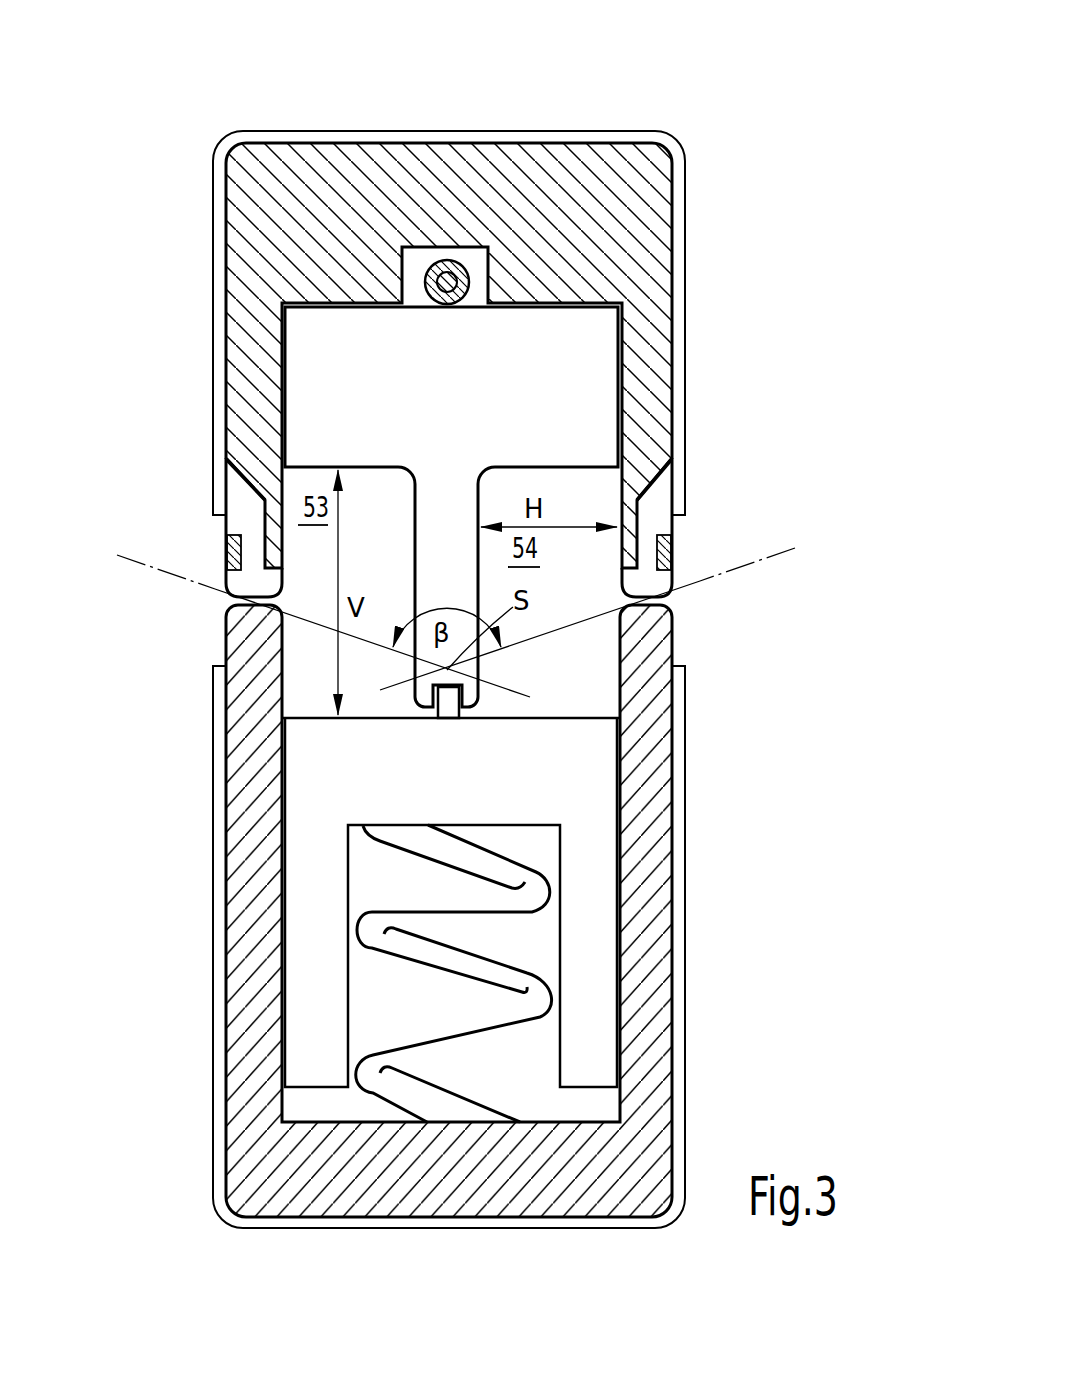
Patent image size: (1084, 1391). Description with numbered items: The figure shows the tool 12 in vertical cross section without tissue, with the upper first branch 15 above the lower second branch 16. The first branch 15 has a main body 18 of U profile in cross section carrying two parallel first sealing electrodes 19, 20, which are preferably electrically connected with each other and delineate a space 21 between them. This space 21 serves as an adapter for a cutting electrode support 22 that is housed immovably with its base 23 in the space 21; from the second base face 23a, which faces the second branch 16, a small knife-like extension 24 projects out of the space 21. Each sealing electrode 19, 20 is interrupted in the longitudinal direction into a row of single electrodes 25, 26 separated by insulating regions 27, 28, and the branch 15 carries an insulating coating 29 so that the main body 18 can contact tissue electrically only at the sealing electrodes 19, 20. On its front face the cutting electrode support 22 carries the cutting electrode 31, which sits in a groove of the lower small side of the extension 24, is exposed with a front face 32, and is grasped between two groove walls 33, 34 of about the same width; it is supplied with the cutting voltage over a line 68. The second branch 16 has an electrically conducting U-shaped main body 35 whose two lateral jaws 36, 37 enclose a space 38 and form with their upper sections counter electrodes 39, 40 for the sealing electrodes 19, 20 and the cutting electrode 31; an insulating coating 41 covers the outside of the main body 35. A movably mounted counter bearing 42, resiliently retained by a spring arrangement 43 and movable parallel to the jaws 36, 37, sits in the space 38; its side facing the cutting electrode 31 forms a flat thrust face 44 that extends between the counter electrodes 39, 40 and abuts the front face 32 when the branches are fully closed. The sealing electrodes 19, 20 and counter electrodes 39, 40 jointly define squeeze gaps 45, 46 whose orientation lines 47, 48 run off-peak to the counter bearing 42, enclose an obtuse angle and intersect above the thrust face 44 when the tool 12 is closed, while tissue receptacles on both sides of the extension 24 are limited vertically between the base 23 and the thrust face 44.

The tool 12 is at (822, 175).
The first branch 15 is at (728, 312).
The second branch 16 is at (723, 952).
The main body 18 is at (548, 207).
The sealing electrode 19 is at (252, 352).
The sealing electrode 20 is at (650, 420).
The space 21 is at (303, 682).
The cutting electrode support 22 is at (403, 498).
The base 23 is at (468, 399).
The second base face 23a is at (317, 465).
The knife-like extension 24 is at (465, 588).
The single electrodes 25 is at (277, 566).
The single electrodes 26 is at (653, 583).
The insulating region 27 is at (237, 580).
The insulating region 28 is at (653, 583).
The insulating coating 29 is at (680, 255).
The cutting electrode 31 is at (480, 681).
The front face 32 is at (447, 722).
The groove wall 33 is at (413, 703).
The groove wall 34 is at (480, 698).
The main body 35 is at (473, 1158).
The jaw 36 is at (250, 727).
The jaw 37 is at (645, 782).
The space 38 is at (620, 657).
The counter electrode 39 is at (245, 615).
The counter electrode 40 is at (652, 615).
The insulating coating 41 is at (687, 873).
The counter bearing 42 is at (452, 811).
The spring arrangement 43 is at (427, 1042).
The thrust face 44 is at (297, 705).
The squeeze gap 45 is at (212, 602).
The squeeze gap 46 is at (677, 596).
The line 47 is at (157, 570).
The line 48 is at (767, 552).
The line 68 is at (452, 262).